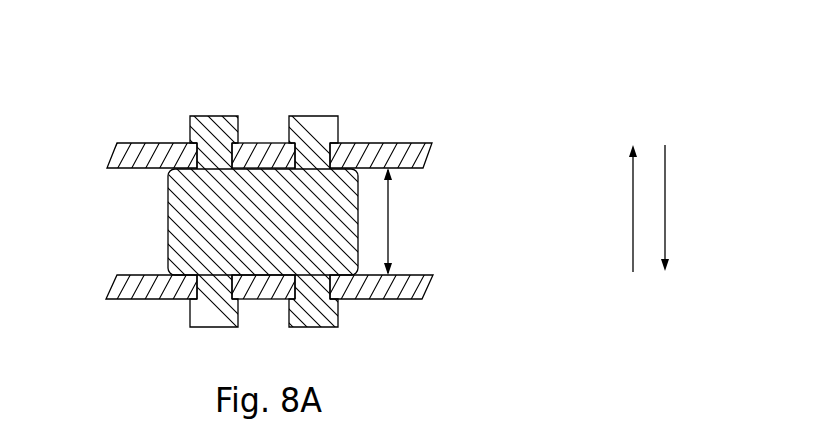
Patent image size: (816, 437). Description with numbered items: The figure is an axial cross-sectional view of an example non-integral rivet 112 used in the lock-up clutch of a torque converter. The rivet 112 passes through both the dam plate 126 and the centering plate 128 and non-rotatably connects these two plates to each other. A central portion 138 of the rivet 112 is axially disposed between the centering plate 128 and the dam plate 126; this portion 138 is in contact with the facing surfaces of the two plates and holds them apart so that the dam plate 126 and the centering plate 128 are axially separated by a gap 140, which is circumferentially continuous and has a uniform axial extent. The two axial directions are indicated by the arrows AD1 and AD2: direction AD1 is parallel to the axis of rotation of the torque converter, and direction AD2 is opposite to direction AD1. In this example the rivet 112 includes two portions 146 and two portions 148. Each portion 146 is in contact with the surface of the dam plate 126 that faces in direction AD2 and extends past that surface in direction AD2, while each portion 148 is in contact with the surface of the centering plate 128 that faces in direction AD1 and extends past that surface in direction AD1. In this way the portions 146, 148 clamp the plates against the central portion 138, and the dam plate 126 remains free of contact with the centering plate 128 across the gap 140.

The rivet 112 is at (269, 76).
The dam plate 126 is at (142, 299).
The centering plate 128 is at (145, 143).
The portion 138 is at (168, 232).
The gap 140 is at (392, 222).
The portion 146 is at (207, 327).
The portion 148 is at (210, 117).
The axial direction AD1 is at (632, 227).
The axial direction AD2 is at (665, 207).